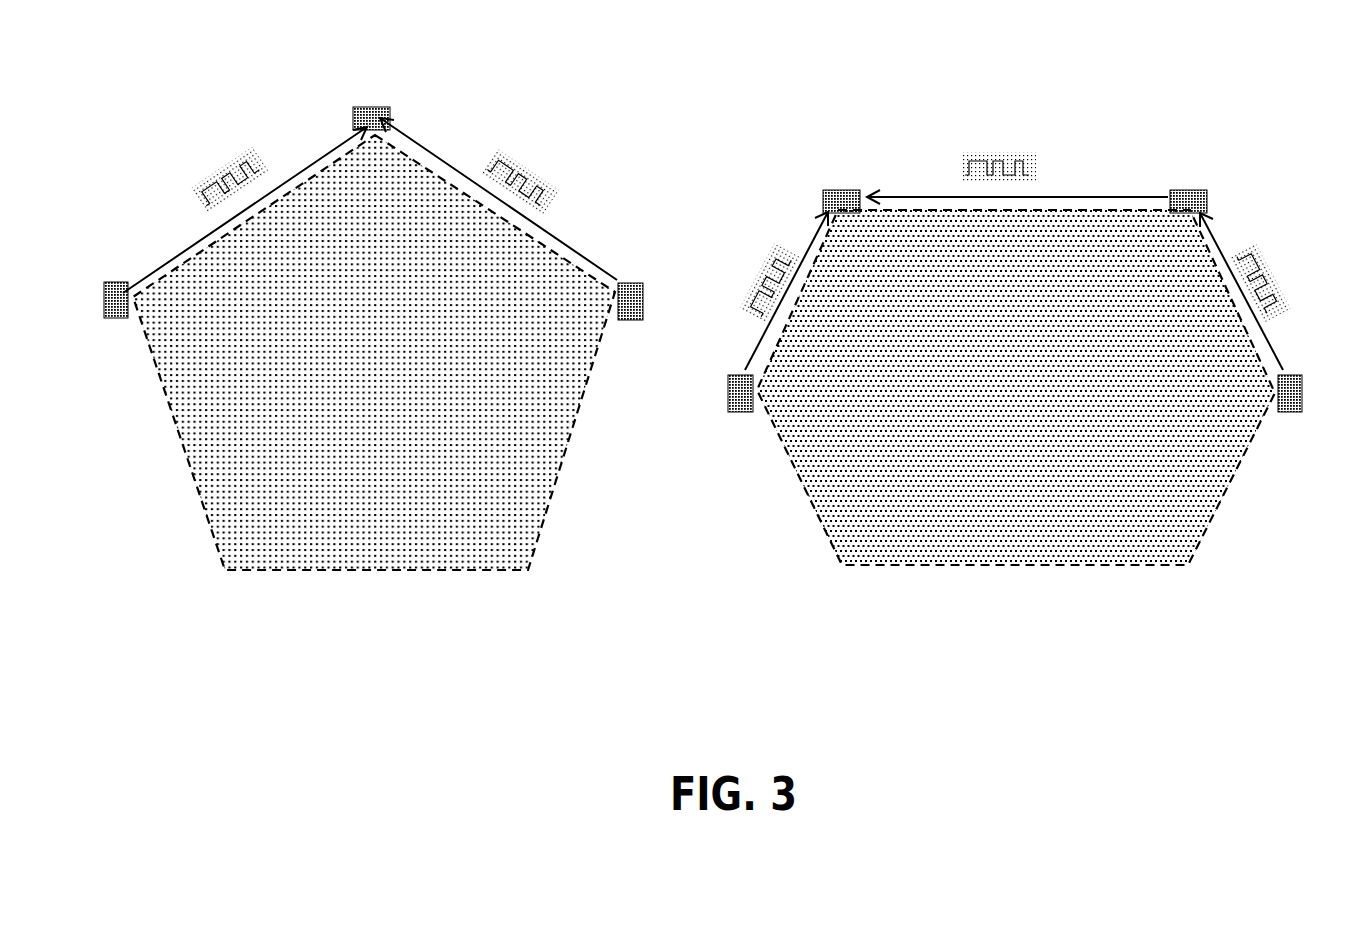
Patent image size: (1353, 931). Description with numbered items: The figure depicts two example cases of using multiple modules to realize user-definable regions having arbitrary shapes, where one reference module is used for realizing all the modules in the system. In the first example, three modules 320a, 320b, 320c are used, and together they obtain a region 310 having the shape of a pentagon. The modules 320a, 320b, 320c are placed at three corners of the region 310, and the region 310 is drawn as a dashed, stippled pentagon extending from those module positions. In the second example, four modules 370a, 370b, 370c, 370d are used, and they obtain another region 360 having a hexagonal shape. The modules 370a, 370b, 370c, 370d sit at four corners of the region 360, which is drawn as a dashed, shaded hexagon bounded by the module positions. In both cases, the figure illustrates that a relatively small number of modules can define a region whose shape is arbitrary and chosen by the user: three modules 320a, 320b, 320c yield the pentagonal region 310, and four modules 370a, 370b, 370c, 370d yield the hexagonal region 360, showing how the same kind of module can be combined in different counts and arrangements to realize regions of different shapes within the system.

The region 310 is at (378, 525).
The module 320a is at (112, 290).
The module 320b is at (368, 120).
The module 320c is at (630, 283).
The region 360 is at (1020, 525).
The module 370a is at (738, 397).
The module 370b is at (843, 197).
The module 370c is at (1185, 208).
The module 370d is at (1290, 402).